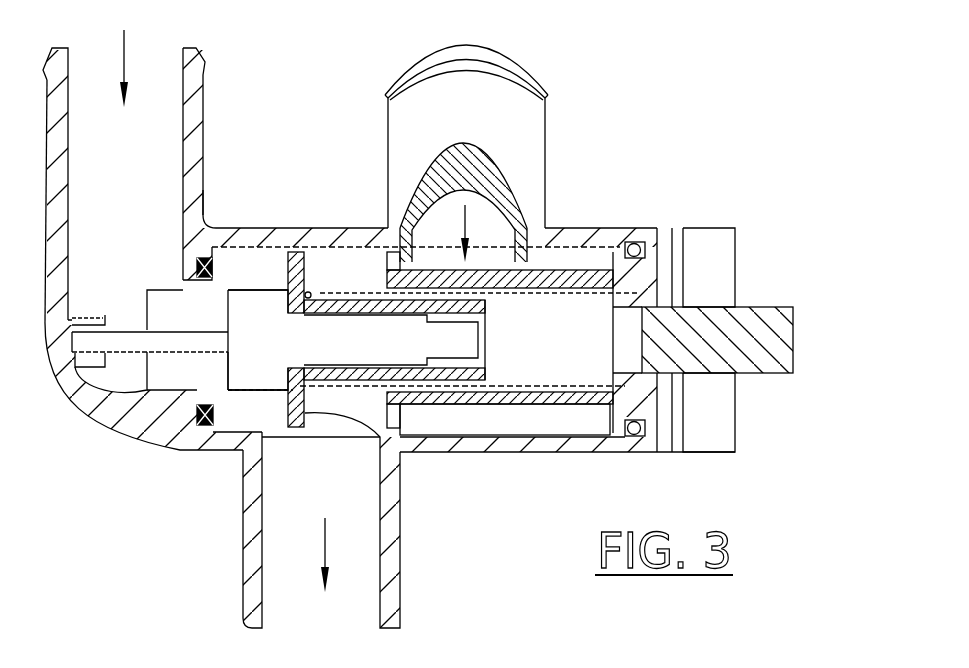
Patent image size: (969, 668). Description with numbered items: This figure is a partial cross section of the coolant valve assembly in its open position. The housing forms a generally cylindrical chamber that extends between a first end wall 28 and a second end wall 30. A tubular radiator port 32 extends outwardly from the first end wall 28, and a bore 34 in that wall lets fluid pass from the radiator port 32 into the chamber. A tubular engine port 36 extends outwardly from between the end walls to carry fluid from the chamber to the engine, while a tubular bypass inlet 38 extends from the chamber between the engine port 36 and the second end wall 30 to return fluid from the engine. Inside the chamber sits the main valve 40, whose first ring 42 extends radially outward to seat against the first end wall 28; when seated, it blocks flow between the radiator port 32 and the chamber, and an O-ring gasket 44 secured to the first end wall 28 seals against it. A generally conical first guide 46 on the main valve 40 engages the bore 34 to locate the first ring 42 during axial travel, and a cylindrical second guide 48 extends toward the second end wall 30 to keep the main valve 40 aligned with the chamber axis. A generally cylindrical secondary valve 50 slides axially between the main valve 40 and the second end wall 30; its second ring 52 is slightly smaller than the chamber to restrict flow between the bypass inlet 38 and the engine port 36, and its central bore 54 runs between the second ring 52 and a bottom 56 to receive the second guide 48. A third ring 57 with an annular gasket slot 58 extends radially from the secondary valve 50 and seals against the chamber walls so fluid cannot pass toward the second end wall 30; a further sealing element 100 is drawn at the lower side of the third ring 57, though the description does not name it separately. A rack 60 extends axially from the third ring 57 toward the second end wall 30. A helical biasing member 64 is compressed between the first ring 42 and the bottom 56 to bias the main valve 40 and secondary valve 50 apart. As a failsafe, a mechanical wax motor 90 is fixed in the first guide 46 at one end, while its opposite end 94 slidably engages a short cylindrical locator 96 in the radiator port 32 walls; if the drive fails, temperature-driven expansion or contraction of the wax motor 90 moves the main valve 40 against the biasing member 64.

The first end wall 28 is at (196, 200).
The second end wall 30 is at (720, 265).
The radiator port 32 is at (163, 57).
The bore 34 is at (150, 420).
The engine port 36 is at (367, 577).
The bypass inlet 38 is at (540, 118).
The main valve 40 is at (332, 377).
The first ring 42 is at (293, 250).
The O-ring gasket 44 is at (197, 417).
The first guide 46 is at (255, 290).
The second guide 48 is at (420, 437).
The secondary valve 50 is at (573, 260).
The second ring 52 is at (388, 262).
The central bore 54 is at (548, 356).
The bottom 56 is at (643, 323).
The third ring 57 is at (597, 453).
The gasket slot 58 is at (637, 243).
The rack 60 is at (750, 313).
The biasing member 64 is at (553, 387).
The wax motor 90 is at (260, 372).
The opposite end 94 is at (92, 340).
The locator 96 is at (92, 320).
The O-ring 100 is at (633, 437).